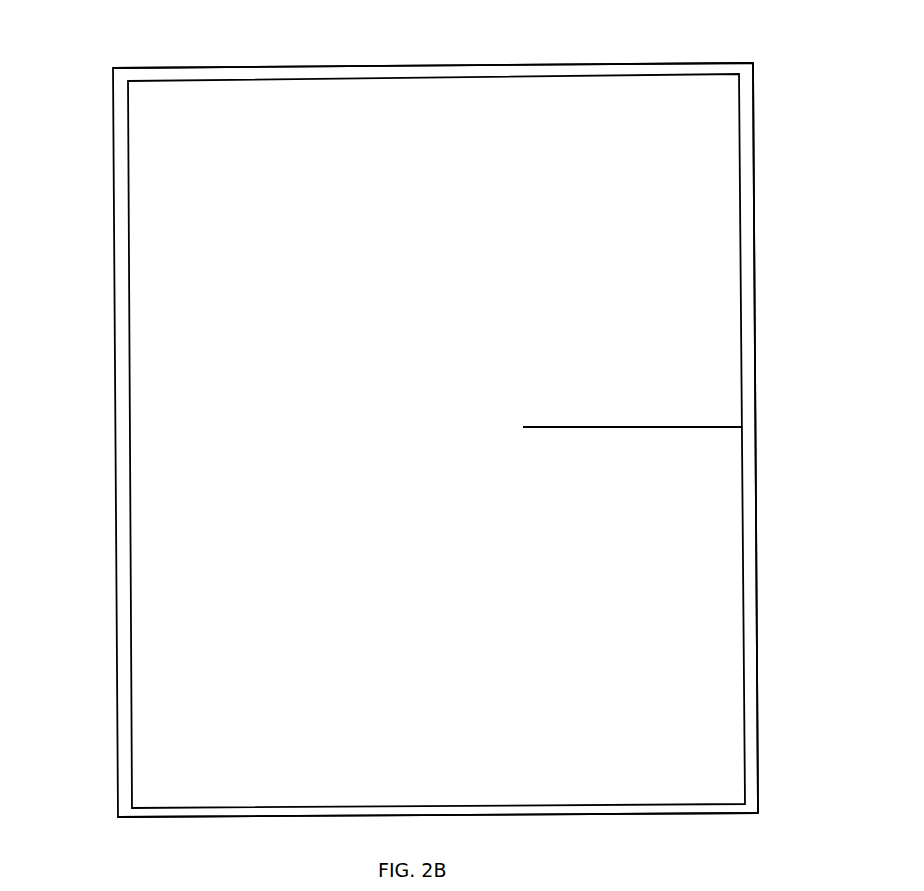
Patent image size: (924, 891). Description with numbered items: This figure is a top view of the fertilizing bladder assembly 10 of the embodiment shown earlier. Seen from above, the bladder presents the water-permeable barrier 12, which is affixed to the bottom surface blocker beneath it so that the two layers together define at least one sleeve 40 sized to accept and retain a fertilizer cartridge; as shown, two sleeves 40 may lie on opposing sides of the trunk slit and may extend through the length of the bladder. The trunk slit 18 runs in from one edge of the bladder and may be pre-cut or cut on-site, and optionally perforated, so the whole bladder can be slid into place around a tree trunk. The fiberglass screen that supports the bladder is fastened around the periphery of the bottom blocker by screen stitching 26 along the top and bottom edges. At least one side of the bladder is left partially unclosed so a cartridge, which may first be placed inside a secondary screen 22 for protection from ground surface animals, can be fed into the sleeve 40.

The wall panel assembly 10 is at (58, 31).
The water-permeable barrier 12 is at (160, 372).
The trunk slit 18 is at (687, 427).
The secondary screen 22 is at (167, 683).
The screen stitching 26 is at (570, 75).
The sleeve 40 is at (755, 229).